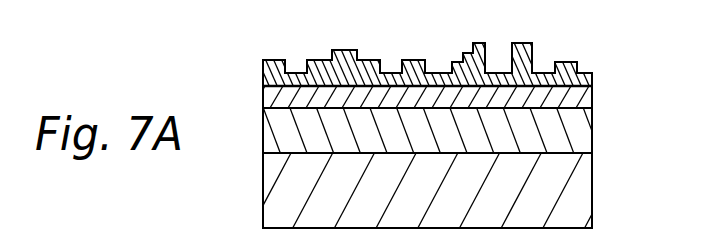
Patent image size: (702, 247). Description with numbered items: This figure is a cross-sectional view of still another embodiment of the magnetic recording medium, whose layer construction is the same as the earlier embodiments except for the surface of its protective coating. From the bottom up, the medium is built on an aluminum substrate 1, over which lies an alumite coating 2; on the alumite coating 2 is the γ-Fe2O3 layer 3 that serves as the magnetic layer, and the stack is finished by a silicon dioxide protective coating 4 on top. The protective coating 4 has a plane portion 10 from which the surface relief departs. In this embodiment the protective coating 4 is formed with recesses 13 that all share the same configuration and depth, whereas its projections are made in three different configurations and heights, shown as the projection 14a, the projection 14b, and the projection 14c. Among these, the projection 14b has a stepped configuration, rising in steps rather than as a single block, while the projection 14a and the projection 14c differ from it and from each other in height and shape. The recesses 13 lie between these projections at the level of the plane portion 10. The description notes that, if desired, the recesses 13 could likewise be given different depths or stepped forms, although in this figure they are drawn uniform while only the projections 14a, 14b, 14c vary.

The aluminum substrate 1 is at (583, 195).
The alumite coating 2 is at (583, 138).
The γ-Fe2O3 layer 3 is at (585, 98).
The silicon dioxide protective coating 4 is at (578, 67).
The plane portion 10 is at (273, 61).
The recesses 13 is at (546, 65).
The projection 14a is at (525, 43).
The stepped projection 14b is at (464, 56).
The projection 14c is at (349, 51).